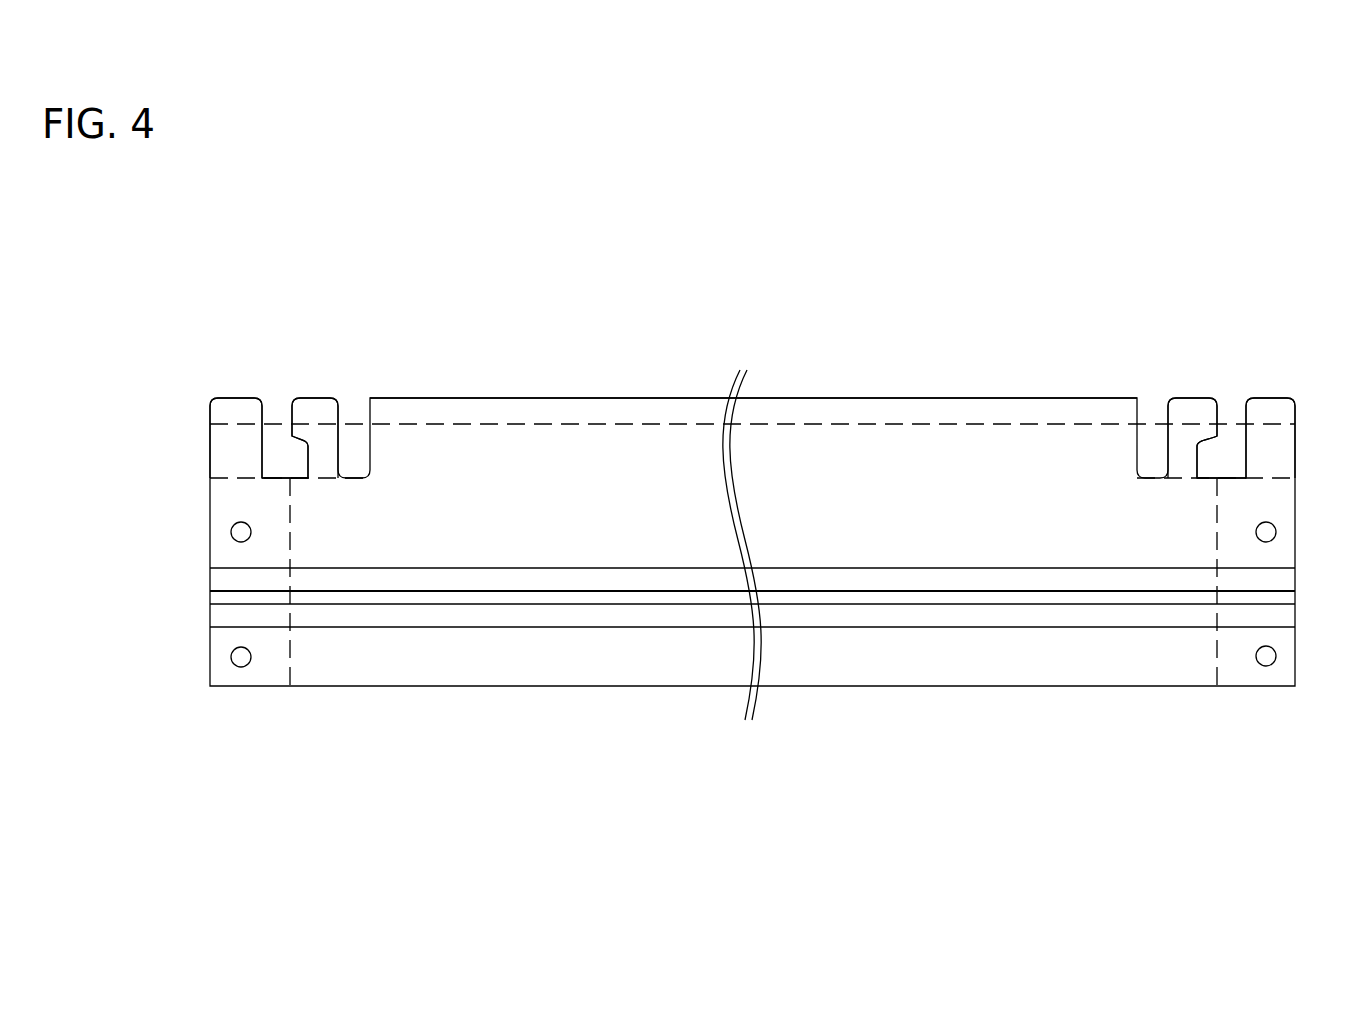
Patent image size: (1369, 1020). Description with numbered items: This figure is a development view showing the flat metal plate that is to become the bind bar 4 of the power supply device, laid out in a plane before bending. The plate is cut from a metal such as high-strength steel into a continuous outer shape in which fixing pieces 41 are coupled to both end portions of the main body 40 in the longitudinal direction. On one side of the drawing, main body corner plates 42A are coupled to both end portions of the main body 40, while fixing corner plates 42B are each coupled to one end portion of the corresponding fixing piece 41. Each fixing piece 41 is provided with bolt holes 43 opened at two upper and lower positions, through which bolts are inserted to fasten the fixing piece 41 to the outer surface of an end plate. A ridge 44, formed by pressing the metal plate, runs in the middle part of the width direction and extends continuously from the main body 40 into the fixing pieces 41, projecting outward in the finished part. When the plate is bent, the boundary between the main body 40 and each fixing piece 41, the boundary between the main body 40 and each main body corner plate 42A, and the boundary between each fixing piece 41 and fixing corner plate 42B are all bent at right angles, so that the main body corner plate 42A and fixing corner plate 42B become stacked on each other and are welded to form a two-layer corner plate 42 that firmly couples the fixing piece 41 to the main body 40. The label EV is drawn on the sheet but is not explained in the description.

The electric vehicle EV is at (923, 158).
The bind bar 4 is at (923, 337).
The main body 40 is at (580, 457).
The fixing piece 41 is at (232, 557).
The corner plate 42 is at (355, 312).
The main body corner plate 42A is at (313, 417).
The fixing corner plate 42B is at (230, 417).
The bolt hole 43 is at (235, 525).
The ridge 44 is at (572, 597).